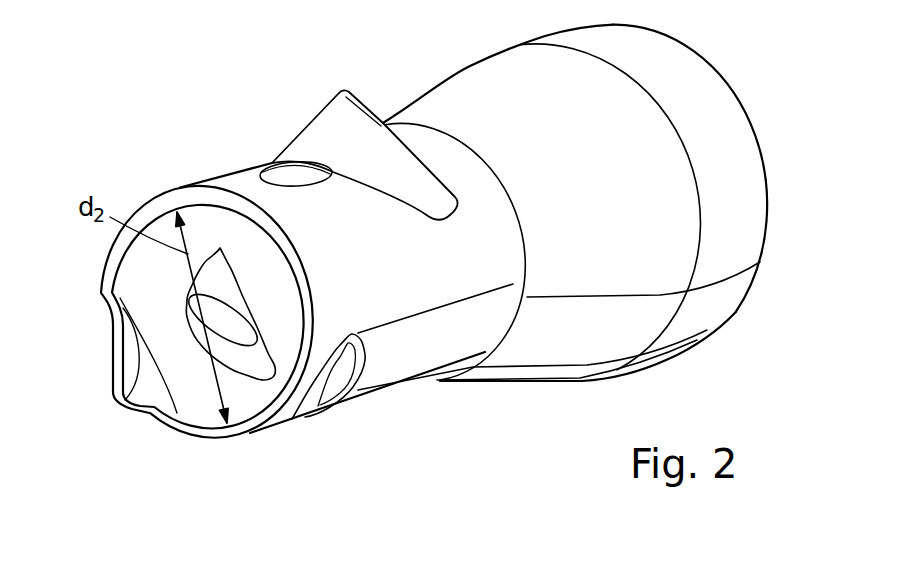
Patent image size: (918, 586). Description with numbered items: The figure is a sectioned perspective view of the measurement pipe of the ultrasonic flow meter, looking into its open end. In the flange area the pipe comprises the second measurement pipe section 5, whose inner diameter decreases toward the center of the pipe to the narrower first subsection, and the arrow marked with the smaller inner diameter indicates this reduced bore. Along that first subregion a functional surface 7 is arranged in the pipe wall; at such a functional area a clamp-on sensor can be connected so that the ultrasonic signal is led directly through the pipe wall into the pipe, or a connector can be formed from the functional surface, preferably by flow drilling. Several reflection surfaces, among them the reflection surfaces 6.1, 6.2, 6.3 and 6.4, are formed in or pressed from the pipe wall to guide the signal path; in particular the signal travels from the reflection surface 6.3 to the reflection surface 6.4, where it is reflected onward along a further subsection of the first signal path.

The second measurement pipe section 5 is at (720, 300).
The functional surface 7 is at (382, 121).
The reflection surface 6.1 is at (237, 330).
The reflection surface 6.2 is at (280, 175).
The reflection surface 6.3 is at (332, 377).
The reflection surface 6.4 is at (118, 367).